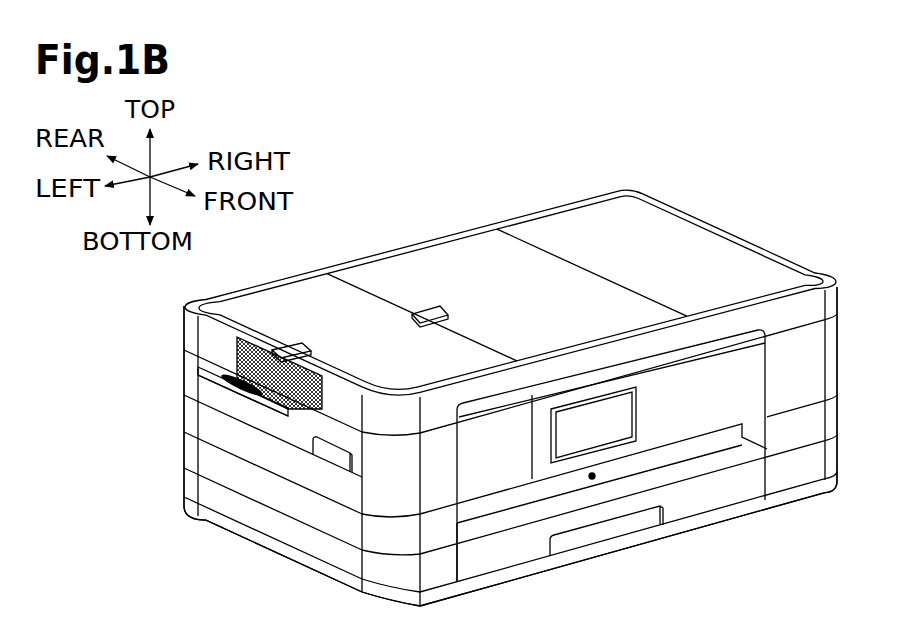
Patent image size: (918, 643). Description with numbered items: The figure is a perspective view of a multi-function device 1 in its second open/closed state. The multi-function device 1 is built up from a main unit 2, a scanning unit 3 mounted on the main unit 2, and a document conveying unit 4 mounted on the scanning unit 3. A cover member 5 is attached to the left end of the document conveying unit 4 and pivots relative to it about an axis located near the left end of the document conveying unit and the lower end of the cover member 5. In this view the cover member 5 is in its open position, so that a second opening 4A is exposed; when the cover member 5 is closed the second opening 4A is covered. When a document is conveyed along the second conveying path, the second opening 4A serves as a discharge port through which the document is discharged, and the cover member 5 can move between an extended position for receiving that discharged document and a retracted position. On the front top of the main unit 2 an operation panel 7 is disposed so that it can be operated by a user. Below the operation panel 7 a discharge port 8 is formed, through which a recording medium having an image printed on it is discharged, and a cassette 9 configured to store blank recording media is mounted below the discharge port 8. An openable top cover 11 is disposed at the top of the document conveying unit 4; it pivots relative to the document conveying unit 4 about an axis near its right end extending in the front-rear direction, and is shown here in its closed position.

The multi-function device 1 is at (388, 206).
The main unit 2 is at (186, 492).
The scanning unit 3 is at (198, 372).
The document conveying unit 4 is at (243, 292).
The second opening 4A is at (253, 345).
The cover member 5 is at (262, 402).
The operation panel 7 is at (674, 406).
The discharge port 8 is at (598, 478).
The cassette 9 is at (500, 551).
The top cover 11 is at (480, 238).